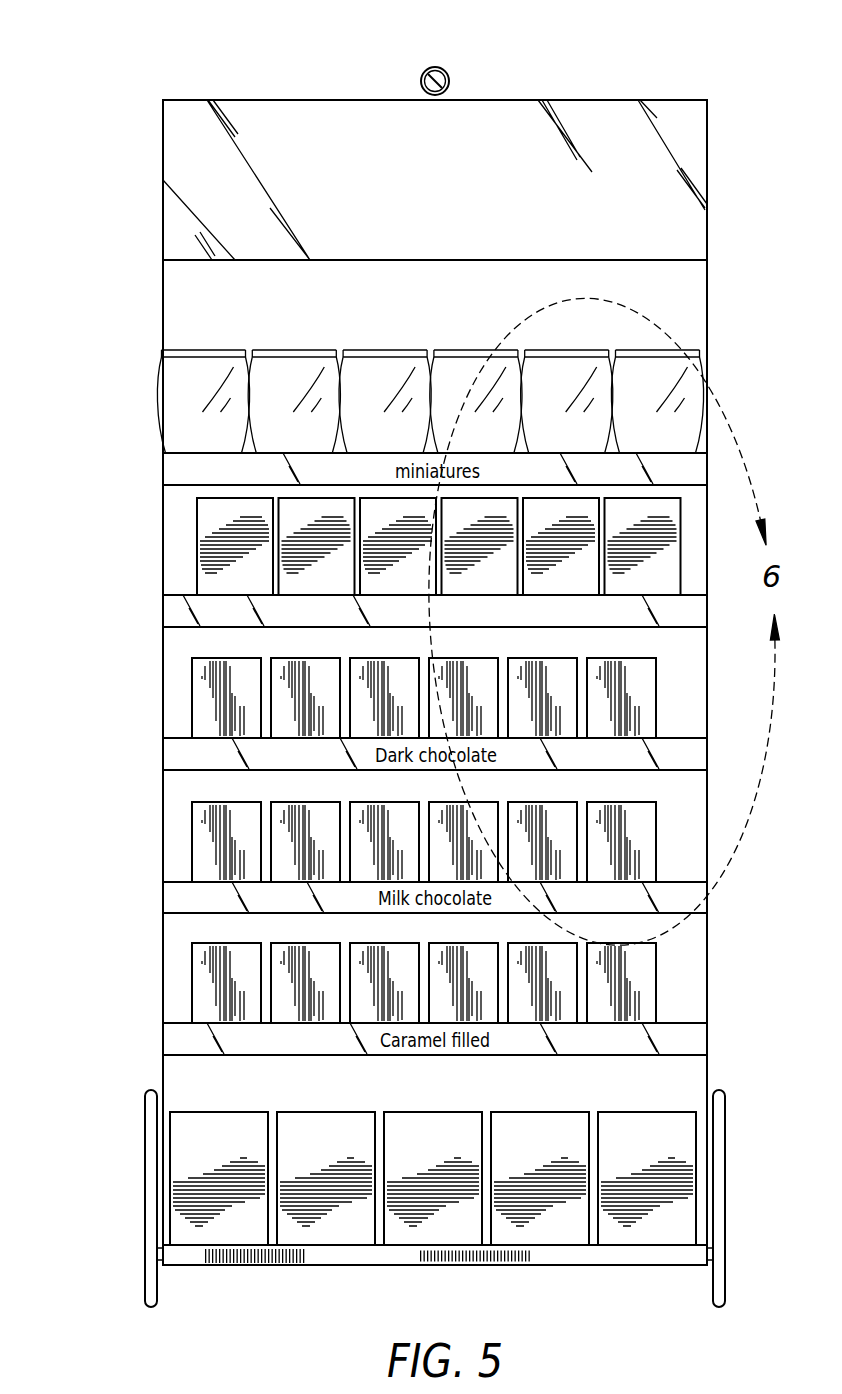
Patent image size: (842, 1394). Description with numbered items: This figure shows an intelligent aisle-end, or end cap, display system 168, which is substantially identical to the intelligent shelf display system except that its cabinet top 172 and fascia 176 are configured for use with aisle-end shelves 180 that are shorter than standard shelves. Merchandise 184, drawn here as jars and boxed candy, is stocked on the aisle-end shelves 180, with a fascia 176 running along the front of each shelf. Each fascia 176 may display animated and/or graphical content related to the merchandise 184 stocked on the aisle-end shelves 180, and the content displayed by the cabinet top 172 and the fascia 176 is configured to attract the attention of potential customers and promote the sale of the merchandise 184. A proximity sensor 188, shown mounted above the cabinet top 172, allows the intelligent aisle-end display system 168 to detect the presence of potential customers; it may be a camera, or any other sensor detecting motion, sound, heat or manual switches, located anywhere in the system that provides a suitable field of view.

The intelligent aisle-end display system 168 is at (660, 25).
The cabinet top 172 is at (213, 162).
The fascia 176 is at (193, 617).
The aisle-end shelves 180 is at (146, 1202).
The merchandise 184 is at (158, 403).
The proximity sensor 188 is at (428, 66).